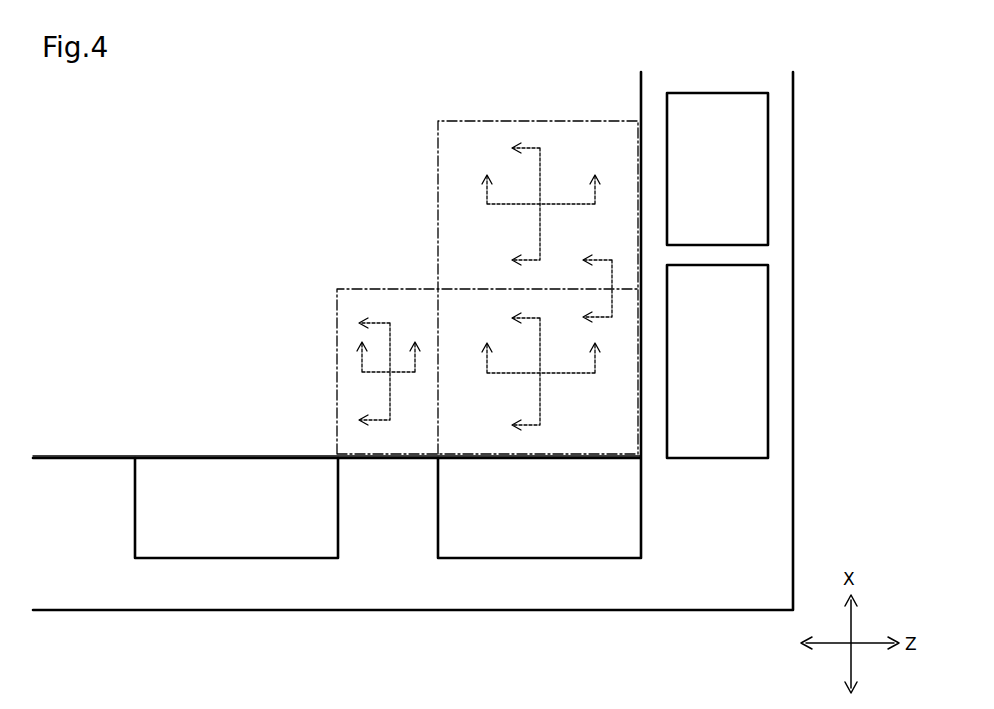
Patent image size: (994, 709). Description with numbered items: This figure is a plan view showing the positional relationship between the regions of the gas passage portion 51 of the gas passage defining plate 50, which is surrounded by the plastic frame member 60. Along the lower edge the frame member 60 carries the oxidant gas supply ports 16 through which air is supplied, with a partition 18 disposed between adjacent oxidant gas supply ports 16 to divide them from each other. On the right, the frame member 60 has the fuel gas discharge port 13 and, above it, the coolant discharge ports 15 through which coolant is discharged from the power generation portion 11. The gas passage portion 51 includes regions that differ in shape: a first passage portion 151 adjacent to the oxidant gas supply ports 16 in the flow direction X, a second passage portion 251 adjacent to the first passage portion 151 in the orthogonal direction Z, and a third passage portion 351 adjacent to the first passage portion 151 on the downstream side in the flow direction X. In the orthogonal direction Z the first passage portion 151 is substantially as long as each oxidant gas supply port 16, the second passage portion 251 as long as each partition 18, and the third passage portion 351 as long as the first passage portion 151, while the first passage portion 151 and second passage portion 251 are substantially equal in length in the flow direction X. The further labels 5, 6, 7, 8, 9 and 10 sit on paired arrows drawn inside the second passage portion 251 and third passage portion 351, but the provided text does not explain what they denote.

The first direction 5 is at (539, 357).
The second direction 6 is at (515, 371).
The third direction 7 is at (387, 362).
The fourth direction 8 is at (369, 372).
The fifth direction 9 is at (537, 189).
The sixth direction 10 is at (508, 204).
The power generation portion 11 is at (582, 288).
The fuel gas discharge port 13 is at (768, 357).
The coolant discharge ports 15 is at (768, 164).
The oxidant gas supply ports 16 is at (232, 557).
The partition 18 is at (384, 505).
The gas passage defining plate 50 is at (57, 458).
The gas passage portion 51 is at (92, 437).
The frame member 60 is at (795, 511).
The first passage portion 151 is at (620, 447).
The second passage portion 251 is at (398, 286).
The third passage portion 351 is at (577, 130).